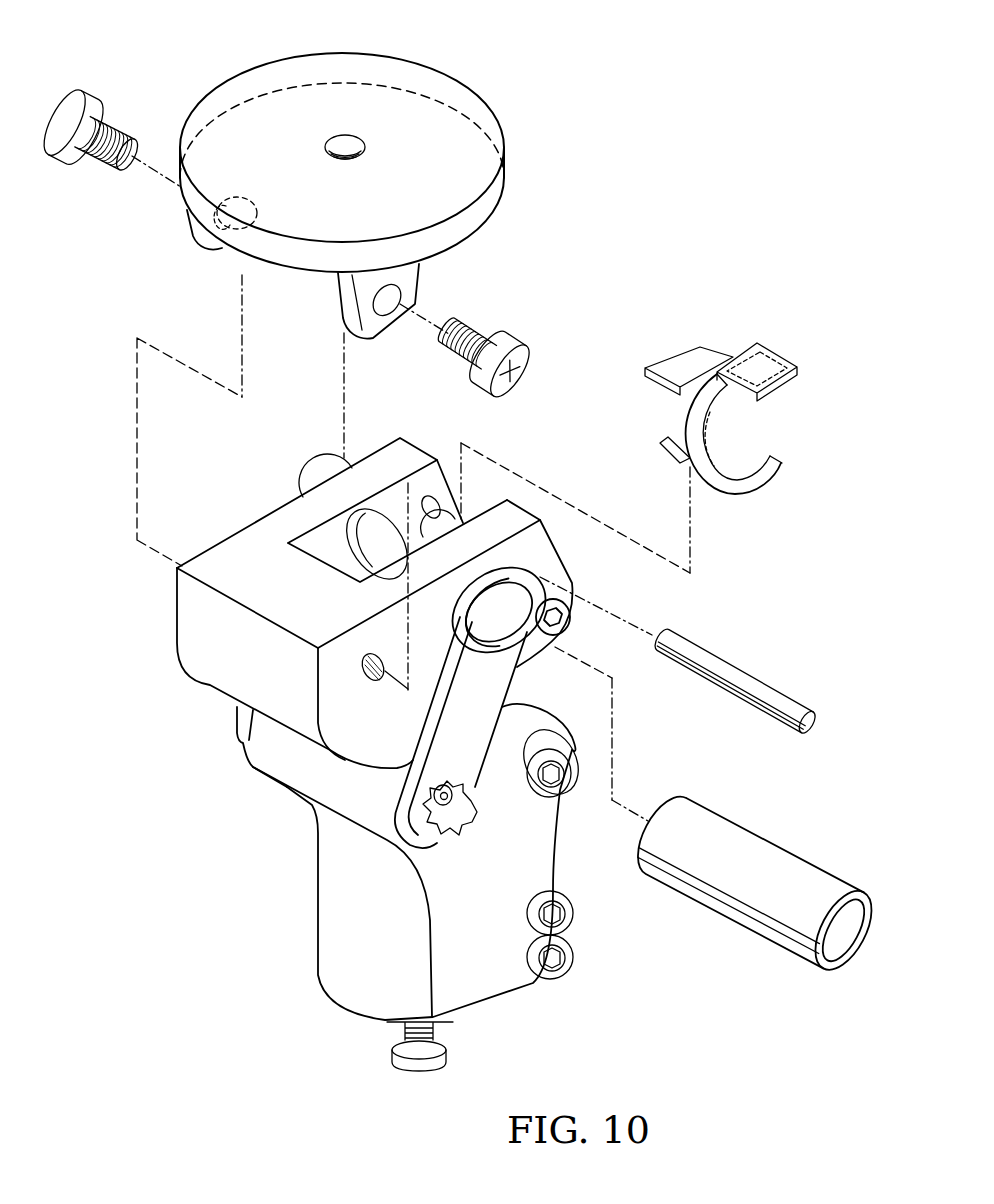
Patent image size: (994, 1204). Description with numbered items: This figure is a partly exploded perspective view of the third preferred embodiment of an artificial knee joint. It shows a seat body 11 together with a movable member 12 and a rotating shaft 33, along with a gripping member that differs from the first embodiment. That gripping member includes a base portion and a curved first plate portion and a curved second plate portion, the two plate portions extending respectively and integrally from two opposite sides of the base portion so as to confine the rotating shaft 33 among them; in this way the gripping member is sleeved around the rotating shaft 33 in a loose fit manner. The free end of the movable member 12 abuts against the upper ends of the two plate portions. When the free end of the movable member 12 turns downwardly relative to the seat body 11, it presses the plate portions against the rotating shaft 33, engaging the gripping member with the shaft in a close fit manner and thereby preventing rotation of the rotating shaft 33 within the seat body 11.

The movable member 12 is at (214, 66).
The seat body 11 is at (262, 512).
The rotating shaft 33 is at (765, 848).